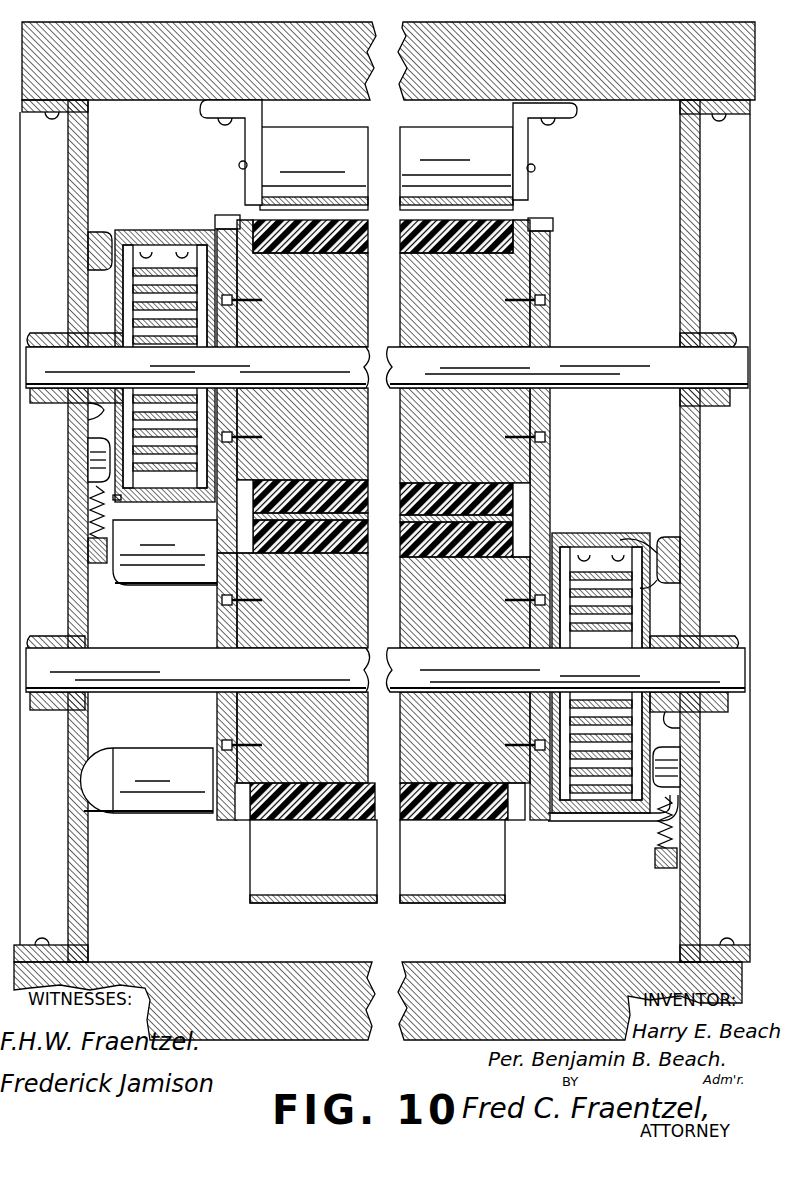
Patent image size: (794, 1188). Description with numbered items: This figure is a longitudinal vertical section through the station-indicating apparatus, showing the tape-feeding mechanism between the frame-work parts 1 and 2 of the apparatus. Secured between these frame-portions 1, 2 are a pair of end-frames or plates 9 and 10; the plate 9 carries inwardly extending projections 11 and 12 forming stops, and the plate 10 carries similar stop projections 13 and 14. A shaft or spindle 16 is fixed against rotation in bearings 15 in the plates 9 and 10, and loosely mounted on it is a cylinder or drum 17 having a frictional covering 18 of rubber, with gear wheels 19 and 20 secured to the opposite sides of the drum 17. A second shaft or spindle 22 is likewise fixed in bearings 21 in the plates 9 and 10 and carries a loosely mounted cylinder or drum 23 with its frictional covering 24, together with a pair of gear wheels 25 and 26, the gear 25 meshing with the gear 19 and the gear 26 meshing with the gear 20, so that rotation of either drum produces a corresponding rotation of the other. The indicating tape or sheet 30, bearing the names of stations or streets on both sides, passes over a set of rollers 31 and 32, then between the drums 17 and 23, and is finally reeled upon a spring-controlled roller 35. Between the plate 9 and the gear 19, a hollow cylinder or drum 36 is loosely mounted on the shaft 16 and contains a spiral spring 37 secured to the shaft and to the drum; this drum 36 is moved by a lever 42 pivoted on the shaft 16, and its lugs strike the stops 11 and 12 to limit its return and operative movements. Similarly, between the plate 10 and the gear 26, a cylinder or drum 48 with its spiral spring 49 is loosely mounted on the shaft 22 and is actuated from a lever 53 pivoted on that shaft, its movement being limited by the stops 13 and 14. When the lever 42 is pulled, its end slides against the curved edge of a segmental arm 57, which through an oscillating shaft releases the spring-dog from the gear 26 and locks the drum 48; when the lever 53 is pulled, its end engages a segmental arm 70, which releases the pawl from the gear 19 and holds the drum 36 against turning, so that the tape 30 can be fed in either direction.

The frame-work part 1 is at (636, 96).
The frame-work part 2 is at (206, 934).
The end-frame or plate 9 is at (70, 191).
The end-frame or plate 10 is at (688, 206).
The stop projection 11 is at (100, 245).
The stop projection 12 is at (92, 466).
The stop projection 13 is at (670, 565).
The stop projection 14 is at (672, 779).
The bearings 15 is at (56, 335).
The shaft or spindle 16 is at (616, 360).
The cylinder or drum 17 is at (510, 284).
The frictional covering 18 is at (498, 231).
The gear wheel 19 is at (220, 232).
The gear wheel 20 is at (548, 244).
The bearings 21 is at (52, 636).
The shaft or spindle 22 is at (122, 660).
The cylinder or drum 23 is at (252, 706).
The frictional covering 24 is at (515, 533).
The gear wheel 25 is at (220, 629).
The gear wheel 26 is at (530, 826).
The indicating tape or sheet 30 is at (470, 158).
The roller 31 is at (163, 815).
The roller 32 is at (169, 577).
The spring-controlled roller 35 is at (322, 160).
The cylinder or drum 36 is at (168, 244).
The spiral spring 37 is at (152, 270).
The lever 42 is at (90, 412).
The cylinder or drum 48 is at (602, 540).
The spiral spring 49 is at (641, 548).
The lever 53 is at (680, 726).
The segmental arm 57 is at (90, 548).
The segmental arm 70 is at (656, 866).